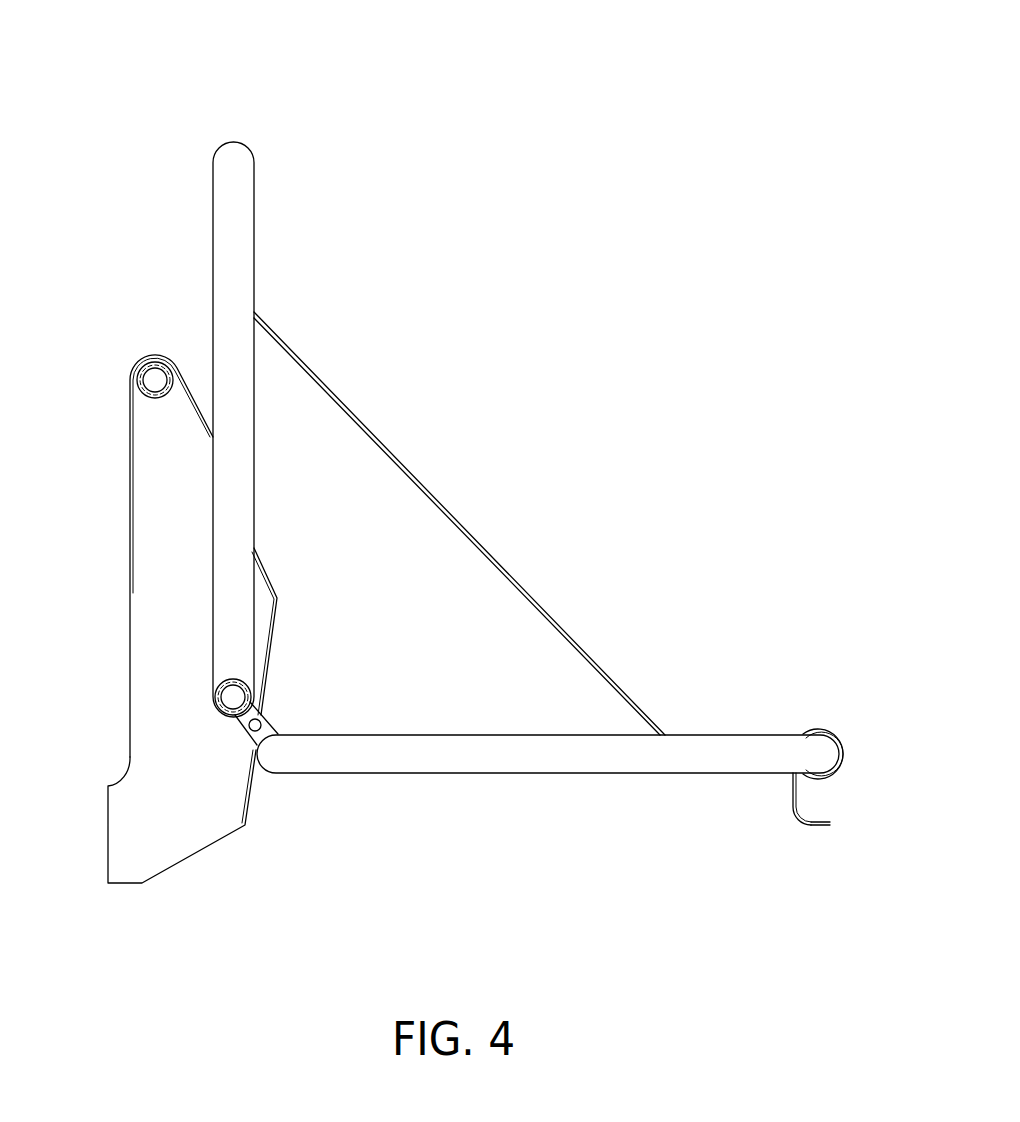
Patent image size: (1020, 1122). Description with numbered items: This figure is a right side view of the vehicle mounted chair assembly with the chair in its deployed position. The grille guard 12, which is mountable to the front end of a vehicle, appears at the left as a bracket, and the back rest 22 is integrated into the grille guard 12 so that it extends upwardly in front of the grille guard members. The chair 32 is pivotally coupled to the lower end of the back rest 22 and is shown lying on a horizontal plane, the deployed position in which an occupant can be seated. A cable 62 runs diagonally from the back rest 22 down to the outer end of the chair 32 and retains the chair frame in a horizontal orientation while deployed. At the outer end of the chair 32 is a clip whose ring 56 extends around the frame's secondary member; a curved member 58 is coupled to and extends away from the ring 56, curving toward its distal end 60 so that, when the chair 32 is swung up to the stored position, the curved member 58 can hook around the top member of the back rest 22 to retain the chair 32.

The grille guard 12 is at (96, 366).
The back rest 22 is at (252, 126).
The chair 32 is at (727, 788).
The ring 56 is at (838, 744).
The curved member 58 is at (797, 828).
The distal end 60 is at (830, 824).
The cable 62 is at (467, 530).